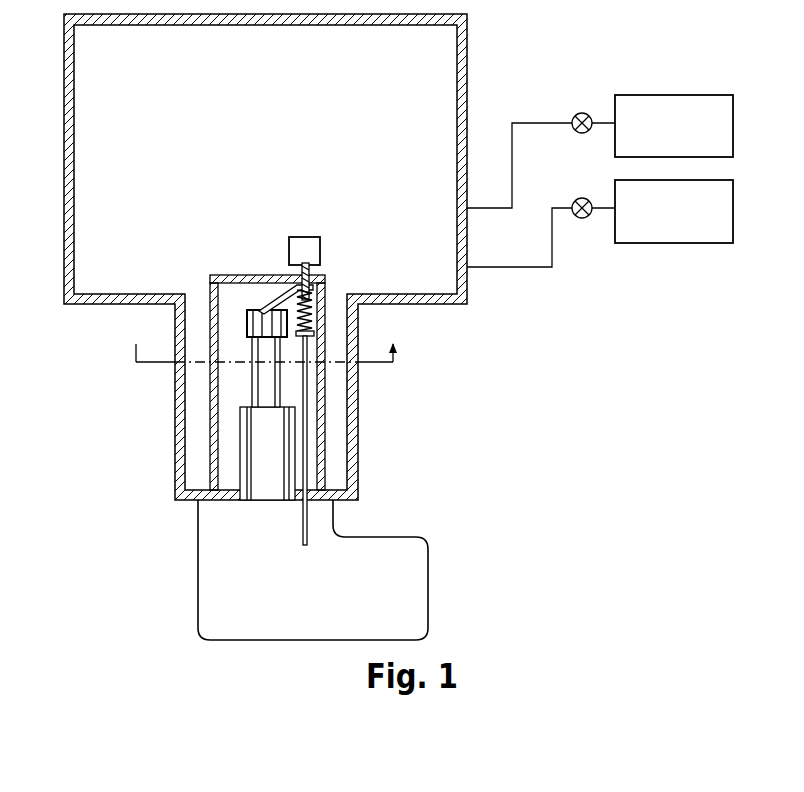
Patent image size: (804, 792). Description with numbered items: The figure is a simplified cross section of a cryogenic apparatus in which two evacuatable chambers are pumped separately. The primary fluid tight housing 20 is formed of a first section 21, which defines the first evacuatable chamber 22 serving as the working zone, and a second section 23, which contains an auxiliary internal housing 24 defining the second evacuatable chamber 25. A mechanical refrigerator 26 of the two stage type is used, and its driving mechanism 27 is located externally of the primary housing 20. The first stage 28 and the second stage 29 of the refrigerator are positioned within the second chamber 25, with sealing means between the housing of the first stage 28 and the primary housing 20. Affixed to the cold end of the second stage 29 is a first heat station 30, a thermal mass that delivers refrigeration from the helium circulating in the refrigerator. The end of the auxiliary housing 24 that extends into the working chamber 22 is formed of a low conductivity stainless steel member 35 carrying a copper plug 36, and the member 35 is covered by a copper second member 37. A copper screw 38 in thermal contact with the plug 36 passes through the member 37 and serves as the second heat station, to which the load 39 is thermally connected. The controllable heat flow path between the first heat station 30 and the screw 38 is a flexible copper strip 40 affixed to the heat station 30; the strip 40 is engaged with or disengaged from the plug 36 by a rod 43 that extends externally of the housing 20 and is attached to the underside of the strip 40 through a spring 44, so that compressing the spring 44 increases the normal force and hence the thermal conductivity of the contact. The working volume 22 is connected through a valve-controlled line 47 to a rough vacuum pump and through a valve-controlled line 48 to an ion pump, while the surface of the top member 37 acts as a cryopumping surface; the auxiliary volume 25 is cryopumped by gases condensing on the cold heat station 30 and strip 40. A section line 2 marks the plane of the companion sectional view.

The section line 2 is at (265, 369).
The primary fluid tight housing 20 is at (277, 257).
The first section 21 is at (466, 49).
The first evacuatable chamber 22 is at (285, 136).
The second section 23 is at (357, 428).
The auxiliary internal housing 24 is at (325, 463).
The second evacuatable chamber 25 is at (224, 400).
The mechanical refrigerator 26 is at (410, 531).
The driving mechanism 27 is at (326, 601).
The first stage 28 is at (280, 463).
The second stage 29 is at (280, 388).
The first heat station 30 is at (247, 323).
The end member 35 is at (212, 279).
The plug 36 is at (325, 285).
The second member 37 is at (245, 254).
The copper screw 38 is at (306, 261).
The load 39 is at (305, 242).
The flexible copper strip 40 is at (261, 310).
The rod 43 is at (308, 520).
The spring 44 is at (324, 297).
The valve-controlled line 47 is at (552, 247).
The valve-controlled line 48 is at (527, 123).